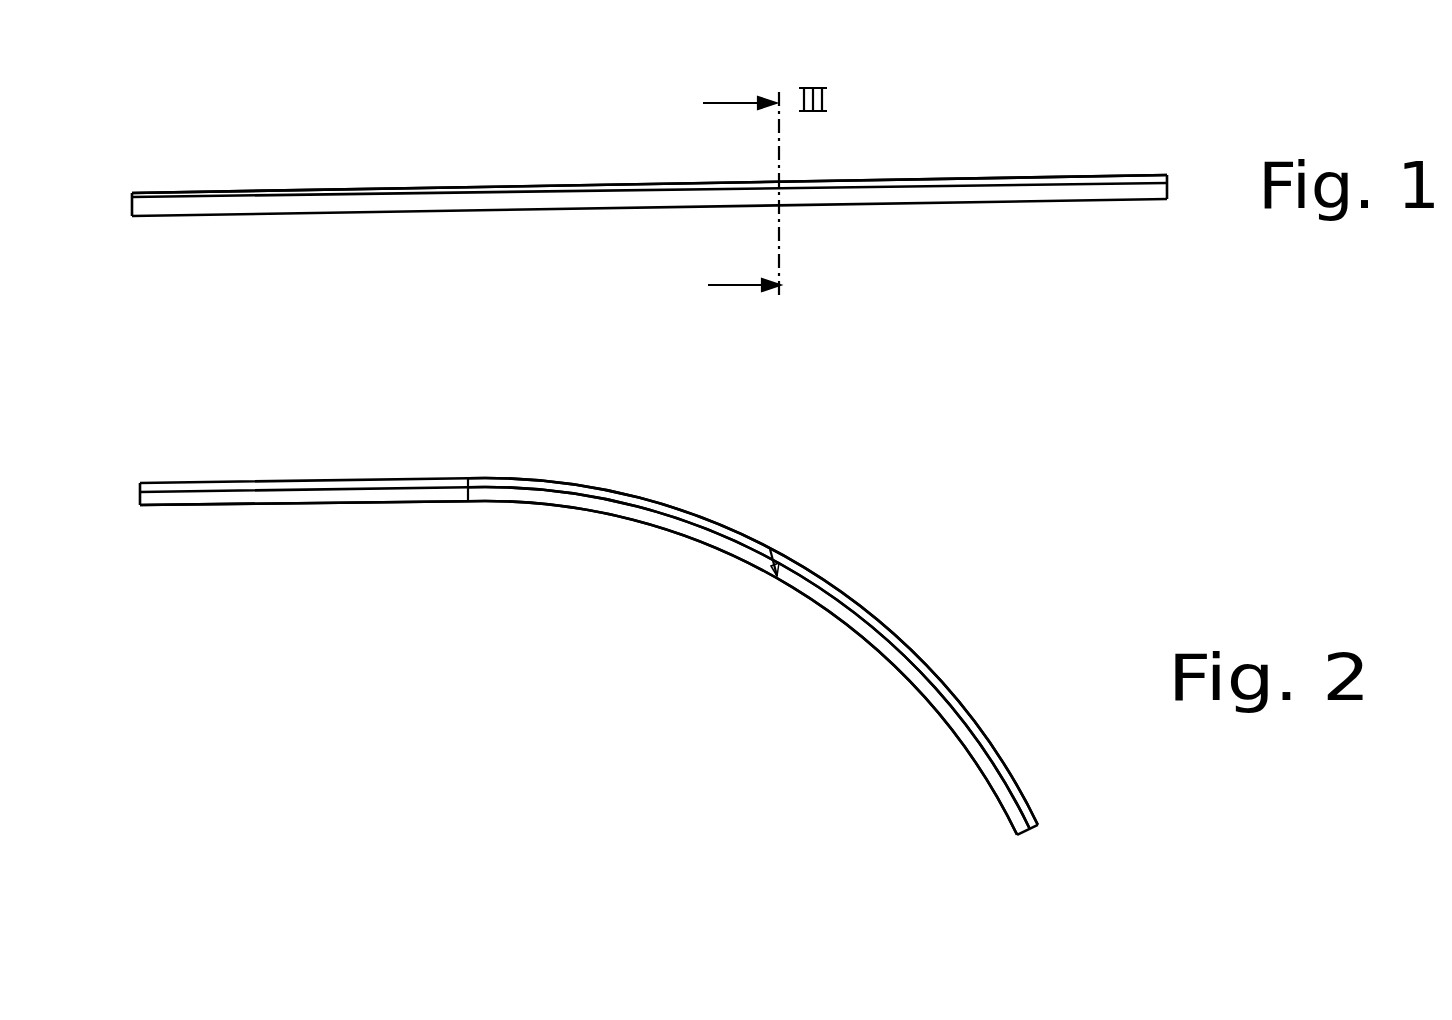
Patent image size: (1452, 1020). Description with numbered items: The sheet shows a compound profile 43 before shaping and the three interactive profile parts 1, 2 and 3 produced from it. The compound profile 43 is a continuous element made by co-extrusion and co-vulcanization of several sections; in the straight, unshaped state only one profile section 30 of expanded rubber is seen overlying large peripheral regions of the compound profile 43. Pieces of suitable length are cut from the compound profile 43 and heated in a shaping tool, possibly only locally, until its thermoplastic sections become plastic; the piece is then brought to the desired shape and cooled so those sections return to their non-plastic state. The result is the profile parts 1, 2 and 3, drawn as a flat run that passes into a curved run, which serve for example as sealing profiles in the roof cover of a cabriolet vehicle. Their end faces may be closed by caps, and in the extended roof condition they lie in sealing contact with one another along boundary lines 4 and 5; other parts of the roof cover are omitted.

In FIG. 2, the profile part 1 is at (950, 740).
In FIG. 2, the profile part 2 is at (642, 530).
In FIG. 2, the profile part 3 is at (266, 512).
In FIG. 2, the boundary line 4 is at (765, 572).
In FIG. 2, the boundary line 5 is at (472, 502).
In FIG. 1, the profile section 30 is at (935, 202).
In FIG. 2, the profile section 30 is at (977, 752).
In FIG. 1, the compound profile 43 is at (1042, 168).
In FIG. 2, the compound profile 43 is at (872, 604).